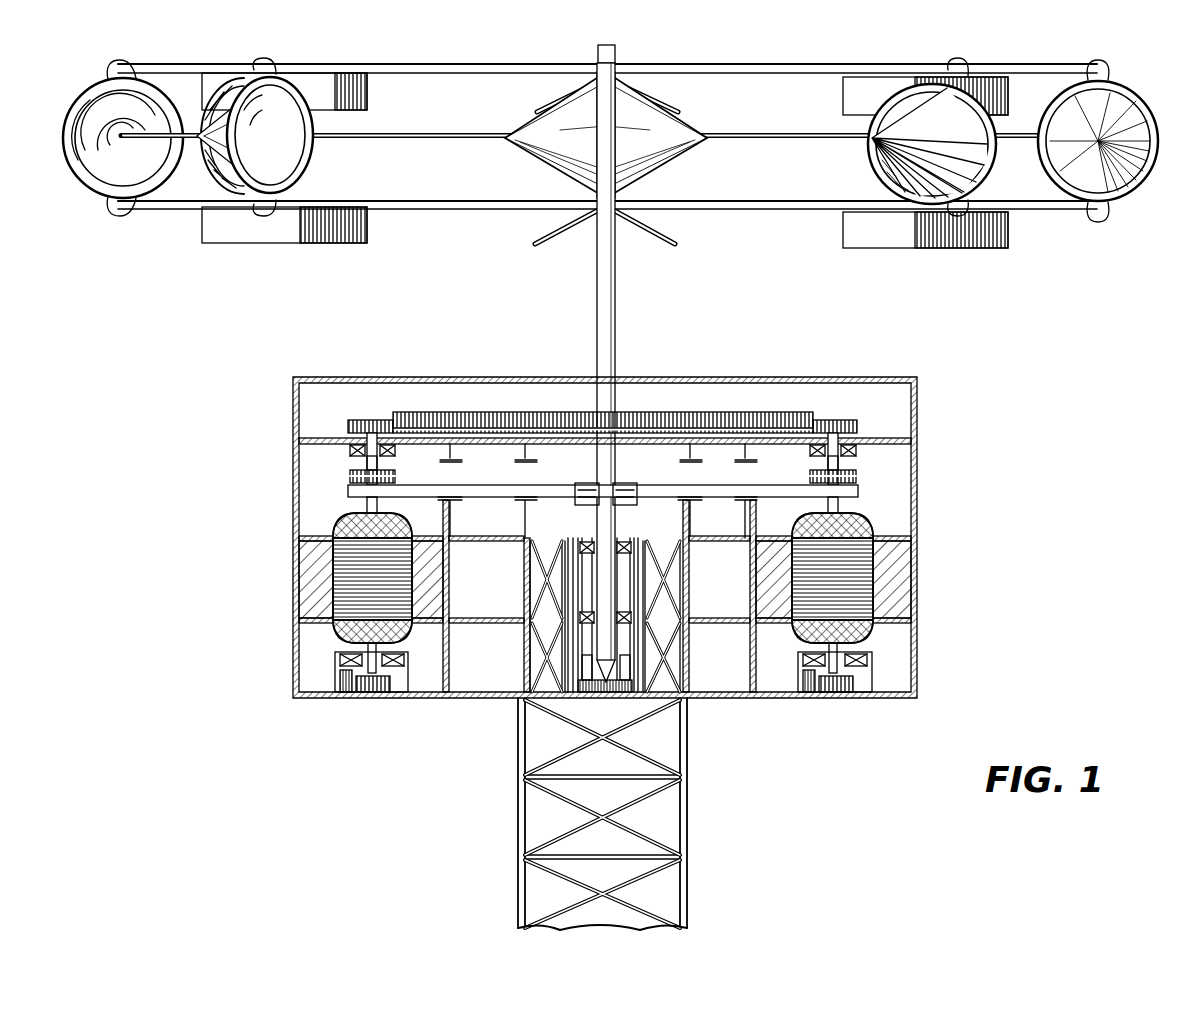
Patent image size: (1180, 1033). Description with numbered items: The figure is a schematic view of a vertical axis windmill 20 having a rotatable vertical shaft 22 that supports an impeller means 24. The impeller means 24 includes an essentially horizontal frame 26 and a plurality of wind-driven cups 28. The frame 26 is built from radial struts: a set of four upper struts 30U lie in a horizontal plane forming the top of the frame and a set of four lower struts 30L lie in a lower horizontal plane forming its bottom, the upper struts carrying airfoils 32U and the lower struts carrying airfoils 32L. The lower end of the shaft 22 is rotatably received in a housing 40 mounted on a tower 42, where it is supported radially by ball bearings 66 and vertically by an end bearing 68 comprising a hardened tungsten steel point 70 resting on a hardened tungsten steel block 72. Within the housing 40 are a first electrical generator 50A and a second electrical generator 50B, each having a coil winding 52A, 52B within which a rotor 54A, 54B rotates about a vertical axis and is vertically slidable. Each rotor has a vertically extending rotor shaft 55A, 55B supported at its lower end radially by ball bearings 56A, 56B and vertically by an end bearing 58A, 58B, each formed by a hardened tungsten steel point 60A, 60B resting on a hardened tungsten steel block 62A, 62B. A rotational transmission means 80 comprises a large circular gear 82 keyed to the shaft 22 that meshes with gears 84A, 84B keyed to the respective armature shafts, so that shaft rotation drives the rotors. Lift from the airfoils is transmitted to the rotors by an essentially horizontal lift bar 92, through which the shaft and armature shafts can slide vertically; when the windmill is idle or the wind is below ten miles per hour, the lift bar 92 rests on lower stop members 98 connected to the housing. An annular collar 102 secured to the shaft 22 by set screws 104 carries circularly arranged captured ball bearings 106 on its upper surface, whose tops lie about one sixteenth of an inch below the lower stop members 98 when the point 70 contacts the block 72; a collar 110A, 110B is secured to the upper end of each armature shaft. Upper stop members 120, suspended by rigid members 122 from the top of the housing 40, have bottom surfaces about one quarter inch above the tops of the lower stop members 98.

The vertical axis windmill 20 is at (205, 372).
The rotatable vertical shaft 22 is at (600, 282).
The impeller means 24 is at (267, 258).
The frame 26 is at (175, 205).
The cups 28 is at (306, 155).
The upper struts 30U is at (176, 76).
The lower struts 30L is at (470, 197).
The upper airfoils 32U is at (357, 85).
The lower airfoils 32L is at (367, 222).
The housing 40 is at (293, 694).
The tower 42 is at (688, 766).
The first electrical generator 50A is at (325, 526).
The second electrical generator 50B is at (887, 527).
The coil winding 52A is at (300, 621).
The coil winding 52B is at (905, 625).
The rotor 54A is at (347, 520).
The rotor 54B is at (812, 520).
The rotor shaft 55A is at (378, 470).
The rotor shaft 55B is at (830, 468).
The ball bearings 56A is at (405, 658).
The ball bearings 56B is at (800, 655).
The end bearing 58A is at (380, 694).
The end bearing 58B is at (845, 694).
The hardened tungsten steel point 60A is at (398, 672).
The hardened tungsten steel point 60B is at (830, 672).
The hardened tungsten steel block 62A is at (363, 694).
The hardened tungsten steel block 62B is at (822, 694).
The ball bearings 66 is at (610, 634).
The end bearing 68 is at (590, 665).
The hardened tungsten steel point 70 is at (640, 665).
The hardened tungsten steel block 72 is at (586, 700).
The rotational transmission means 80 is at (623, 408).
The large circular gear 82 is at (737, 418).
The gear 84A is at (360, 418).
The gear 84B is at (870, 403).
The lift bar 92 is at (480, 492).
The lower stop members 98 is at (520, 540).
The collar 102 is at (680, 548).
The set screws 104 is at (598, 505).
The captured ball bearings 106 is at (625, 503).
The collar 110A is at (350, 478).
The collar 110B is at (860, 478).
The upper stop members 120 is at (535, 452).
The rigid members 122 is at (455, 452).